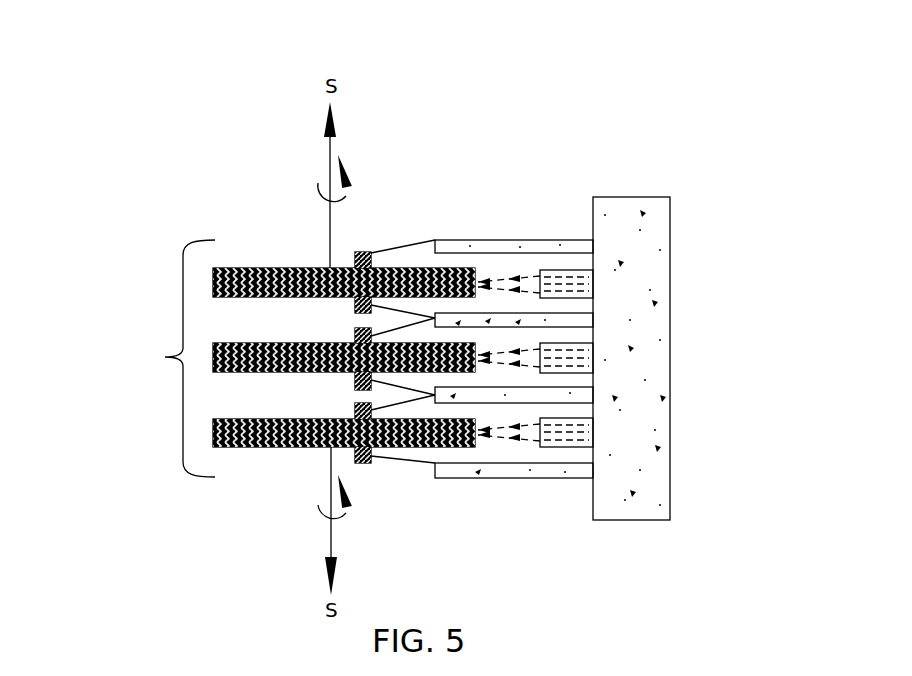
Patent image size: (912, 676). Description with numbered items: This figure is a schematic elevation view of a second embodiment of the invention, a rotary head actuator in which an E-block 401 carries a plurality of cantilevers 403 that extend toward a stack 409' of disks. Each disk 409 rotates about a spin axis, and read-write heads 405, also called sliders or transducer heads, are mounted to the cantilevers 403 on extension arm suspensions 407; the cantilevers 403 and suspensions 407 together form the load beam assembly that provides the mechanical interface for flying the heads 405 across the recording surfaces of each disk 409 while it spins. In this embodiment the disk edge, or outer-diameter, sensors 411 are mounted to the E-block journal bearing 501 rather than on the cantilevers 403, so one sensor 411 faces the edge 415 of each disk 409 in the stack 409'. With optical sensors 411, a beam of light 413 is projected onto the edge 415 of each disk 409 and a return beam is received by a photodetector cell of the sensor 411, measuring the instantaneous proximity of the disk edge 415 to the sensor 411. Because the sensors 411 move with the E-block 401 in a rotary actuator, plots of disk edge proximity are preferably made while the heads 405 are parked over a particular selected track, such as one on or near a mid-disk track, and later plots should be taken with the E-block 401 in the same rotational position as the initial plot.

The E-block 401 is at (584, 166).
The cantilevers 403 is at (517, 512).
The read-write heads 405 is at (363, 210).
The extension arm suspensions 407 is at (404, 212).
The disk 409 is at (344, 293).
The stack 409' is at (282, 308).
The disk edge sensor 411 is at (553, 270).
The beam of light 413 is at (512, 279).
The edge 415 is at (494, 278).
The E-block journal bearing 501 is at (672, 355).